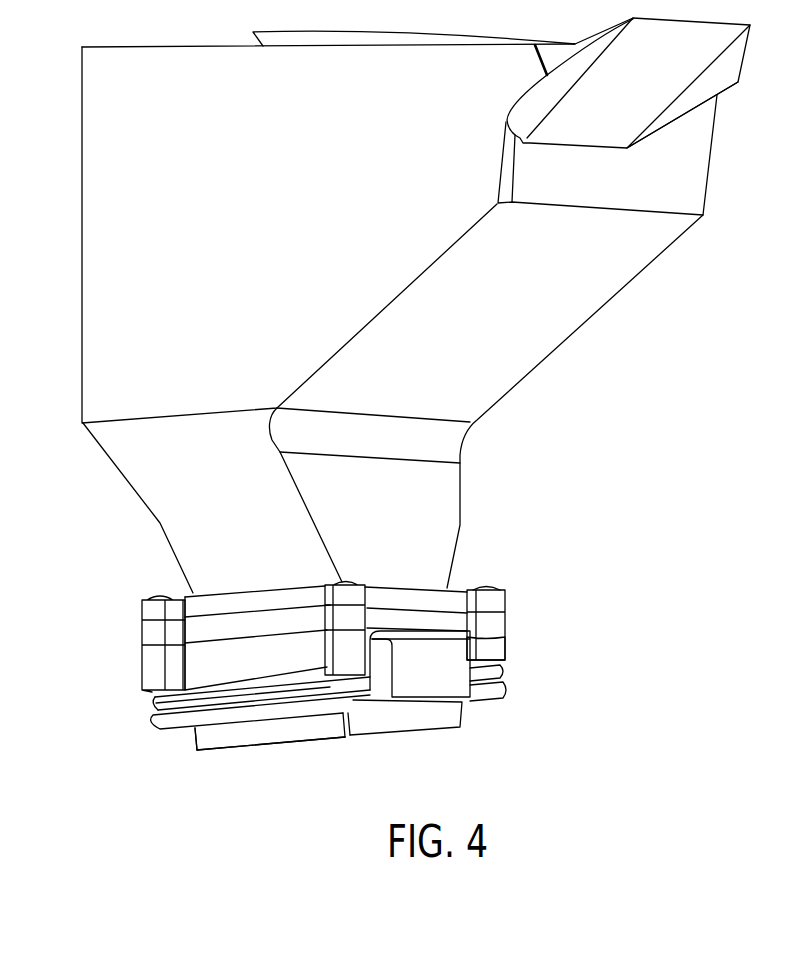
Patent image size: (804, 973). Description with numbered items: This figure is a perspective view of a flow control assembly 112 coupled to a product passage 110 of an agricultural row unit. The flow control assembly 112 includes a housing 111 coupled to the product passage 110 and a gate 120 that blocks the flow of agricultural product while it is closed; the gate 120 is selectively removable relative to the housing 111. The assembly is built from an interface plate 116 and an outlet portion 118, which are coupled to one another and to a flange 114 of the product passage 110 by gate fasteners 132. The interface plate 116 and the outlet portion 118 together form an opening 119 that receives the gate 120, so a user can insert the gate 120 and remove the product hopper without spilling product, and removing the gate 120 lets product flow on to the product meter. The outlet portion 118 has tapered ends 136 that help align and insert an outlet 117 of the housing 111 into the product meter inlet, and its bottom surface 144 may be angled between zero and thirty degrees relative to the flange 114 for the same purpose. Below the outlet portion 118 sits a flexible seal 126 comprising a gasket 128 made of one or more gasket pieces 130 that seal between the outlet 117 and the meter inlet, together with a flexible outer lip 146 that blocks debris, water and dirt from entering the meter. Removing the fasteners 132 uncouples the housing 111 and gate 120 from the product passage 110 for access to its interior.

The product passage 110 is at (66, 395).
The housing 111 is at (520, 609).
The flow control assembly 112 is at (111, 664).
The flange 114 is at (215, 603).
The interface plate 116 is at (255, 620).
The outlet 117 is at (458, 748).
The outlet portion 118 is at (266, 672).
The opening 119 is at (520, 653).
The gate 120 is at (463, 688).
The flexible seal 126 is at (342, 756).
The gasket 128 is at (260, 706).
The gasket pieces 130 is at (157, 722).
The gate fasteners 132 is at (489, 571).
The tapered ends 136 is at (195, 741).
The bottom surface 144 is at (264, 765).
The flexible outer lip 146 is at (143, 741).